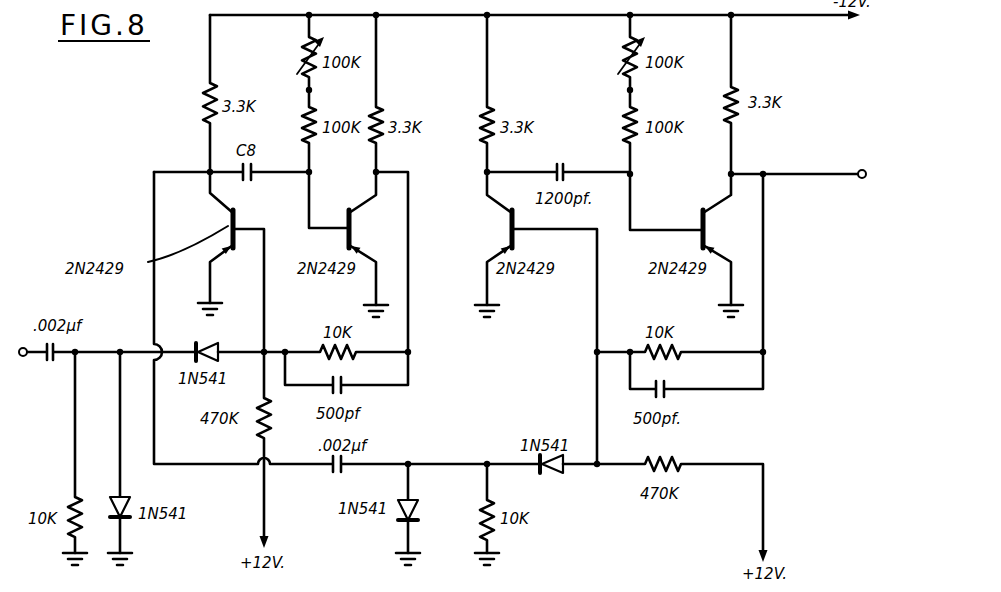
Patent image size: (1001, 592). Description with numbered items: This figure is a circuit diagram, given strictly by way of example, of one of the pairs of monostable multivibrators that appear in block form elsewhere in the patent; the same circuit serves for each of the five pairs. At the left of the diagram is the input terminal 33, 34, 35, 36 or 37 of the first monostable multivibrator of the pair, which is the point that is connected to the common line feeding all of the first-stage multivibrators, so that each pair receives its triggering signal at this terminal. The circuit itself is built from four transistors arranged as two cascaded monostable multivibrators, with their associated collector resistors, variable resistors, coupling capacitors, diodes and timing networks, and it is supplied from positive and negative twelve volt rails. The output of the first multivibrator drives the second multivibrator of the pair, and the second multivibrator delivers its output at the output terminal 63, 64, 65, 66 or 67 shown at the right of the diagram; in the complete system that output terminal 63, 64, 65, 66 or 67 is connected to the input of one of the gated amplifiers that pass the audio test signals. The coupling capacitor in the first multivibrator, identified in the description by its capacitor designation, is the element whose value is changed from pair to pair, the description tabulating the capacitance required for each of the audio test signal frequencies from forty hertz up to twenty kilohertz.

The input terminal 33 is at (74, 320).
The input terminal 34 is at (74, 320).
The input terminal 35 is at (74, 320).
The input terminal 36 is at (74, 320).
The input terminal 37 is at (23, 348).
The output terminal 63 is at (808, 157).
The output terminal 64 is at (808, 157).
The output terminal 65 is at (808, 157).
The output terminal 66 is at (808, 157).
The output terminal 67 is at (878, 153).